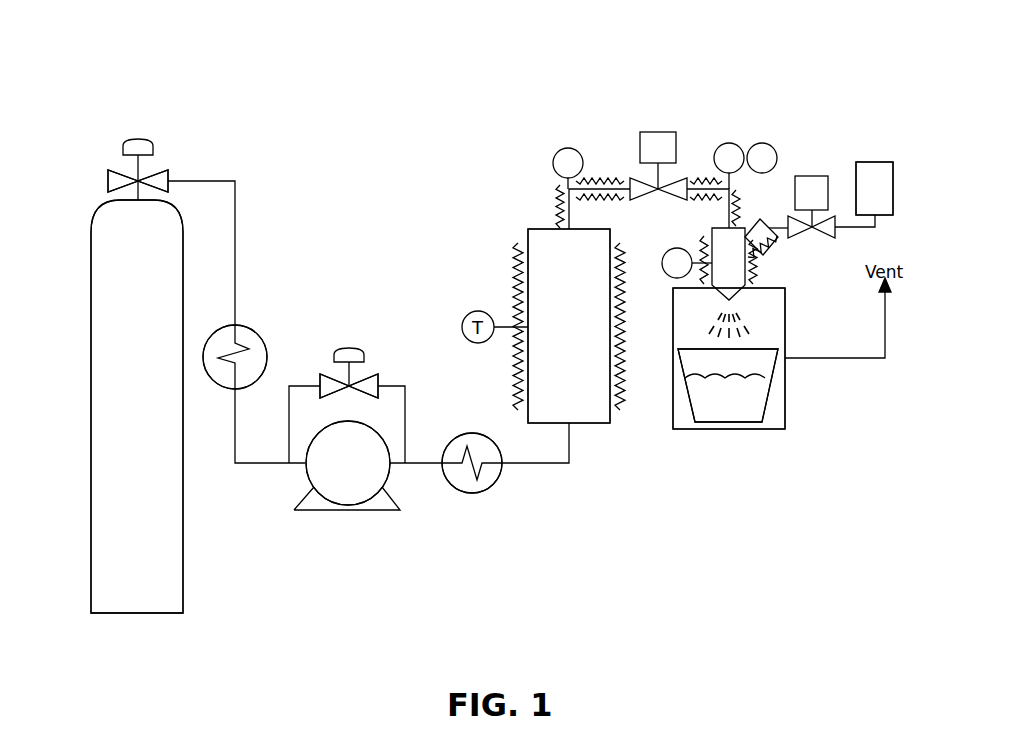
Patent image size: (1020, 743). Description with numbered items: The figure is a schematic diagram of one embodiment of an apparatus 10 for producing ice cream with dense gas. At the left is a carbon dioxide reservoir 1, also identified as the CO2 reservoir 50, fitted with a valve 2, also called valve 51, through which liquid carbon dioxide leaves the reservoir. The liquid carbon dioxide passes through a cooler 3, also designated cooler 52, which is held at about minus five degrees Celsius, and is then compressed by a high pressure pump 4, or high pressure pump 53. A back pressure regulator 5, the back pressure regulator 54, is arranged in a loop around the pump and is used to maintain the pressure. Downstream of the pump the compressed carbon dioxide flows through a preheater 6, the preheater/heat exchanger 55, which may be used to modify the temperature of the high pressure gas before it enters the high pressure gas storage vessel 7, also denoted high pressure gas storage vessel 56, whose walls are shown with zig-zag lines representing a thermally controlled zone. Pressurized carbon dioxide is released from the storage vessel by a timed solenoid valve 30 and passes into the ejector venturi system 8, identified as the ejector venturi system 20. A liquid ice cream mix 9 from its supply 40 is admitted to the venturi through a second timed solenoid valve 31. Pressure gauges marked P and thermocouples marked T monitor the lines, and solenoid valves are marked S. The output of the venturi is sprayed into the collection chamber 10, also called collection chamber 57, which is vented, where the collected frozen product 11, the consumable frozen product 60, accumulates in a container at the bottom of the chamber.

The carbon dioxide reservoir 1 is at (137, 406).
The valve 2 is at (142, 166).
The cooler 3 is at (235, 348).
The high pressure pump 4 is at (348, 463).
The back pressure regulator 5 is at (349, 361).
The preheater 6 is at (472, 452).
The high pressure gas storage vessel 7 is at (569, 326).
The ejector venturi system 8 is at (728, 264).
The liquid ice cream mix 9 is at (874, 188).
The collection chamber 10 is at (708, 672).
The collected frozen product 11 is at (728, 385).
The ejector venturi system 20 is at (774, 264).
The timed solenoid valve 30 is at (658, 132).
The timed solenoid valve 31 is at (808, 176).
The liquid ice cream mix source 40 is at (887, 175).
The CO2 reservoir 50 is at (90, 518).
The valve 51 is at (165, 182).
The cooler 52 is at (245, 348).
The high pressure pump 53 is at (346, 512).
The back pressure regulator 54 is at (349, 386).
The preheater/heat exchanger 55 is at (480, 470).
The high pressure gas storage vessel 56 is at (526, 228).
The collection chamber 57 is at (683, 420).
The consumable frozen product 60 is at (748, 400).